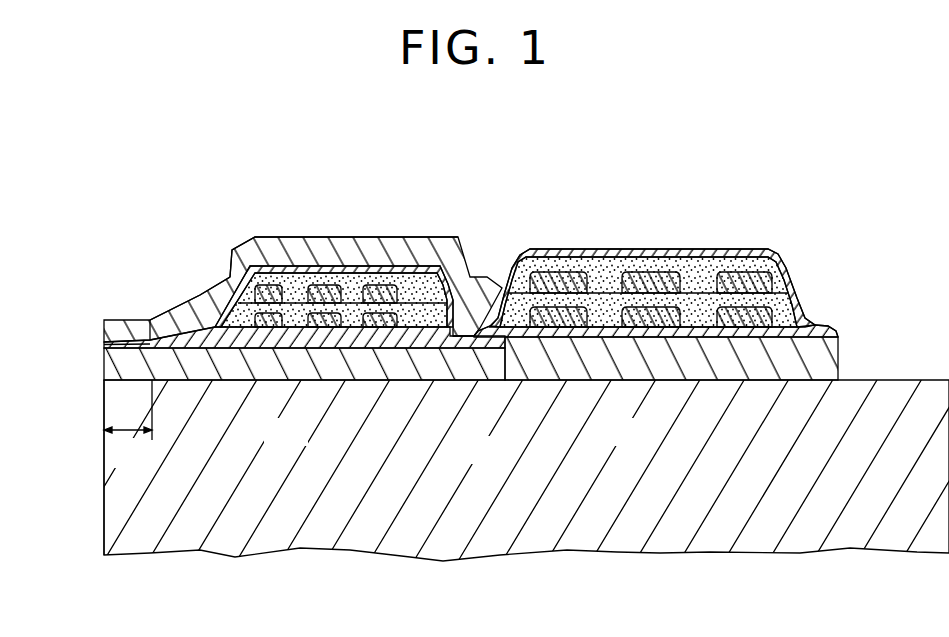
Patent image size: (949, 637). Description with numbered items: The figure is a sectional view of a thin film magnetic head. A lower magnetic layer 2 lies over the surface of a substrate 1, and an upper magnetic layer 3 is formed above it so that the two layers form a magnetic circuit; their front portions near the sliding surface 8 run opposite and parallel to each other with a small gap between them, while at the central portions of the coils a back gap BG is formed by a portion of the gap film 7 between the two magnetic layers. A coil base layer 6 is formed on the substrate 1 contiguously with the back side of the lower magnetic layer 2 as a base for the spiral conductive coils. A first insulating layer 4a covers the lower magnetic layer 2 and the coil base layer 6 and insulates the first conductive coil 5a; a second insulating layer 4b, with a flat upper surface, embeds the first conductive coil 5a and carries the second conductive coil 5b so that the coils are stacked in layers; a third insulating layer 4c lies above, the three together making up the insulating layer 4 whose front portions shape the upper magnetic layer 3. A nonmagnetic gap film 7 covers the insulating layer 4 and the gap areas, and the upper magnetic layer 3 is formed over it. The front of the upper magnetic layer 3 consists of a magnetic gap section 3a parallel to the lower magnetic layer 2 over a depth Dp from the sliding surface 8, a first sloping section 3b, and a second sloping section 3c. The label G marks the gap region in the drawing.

The substrate 1 is at (125, 487).
The lower magnetic layer 2 is at (104, 372).
The upper magnetic layer 3 is at (104, 332).
The magnetic gap section 3a is at (116, 324).
The first sloping section 3b is at (185, 317).
The second sloping section 3c is at (228, 286).
The insulating layer 4 is at (378, 146).
The first insulating layer 4a is at (434, 318).
The second insulating layer 4b is at (417, 300).
The third insulating layer 4c is at (400, 270).
The first conductive coil 5a is at (377, 316).
The second conductive coil 5b is at (370, 285).
The coil base layer 6 is at (827, 355).
The gap film 7 is at (132, 342).
The sliding surface 8 is at (104, 522).
The gate electrode G is at (104, 346).
The back gap BG is at (472, 340).
The depth Dp is at (128, 422).